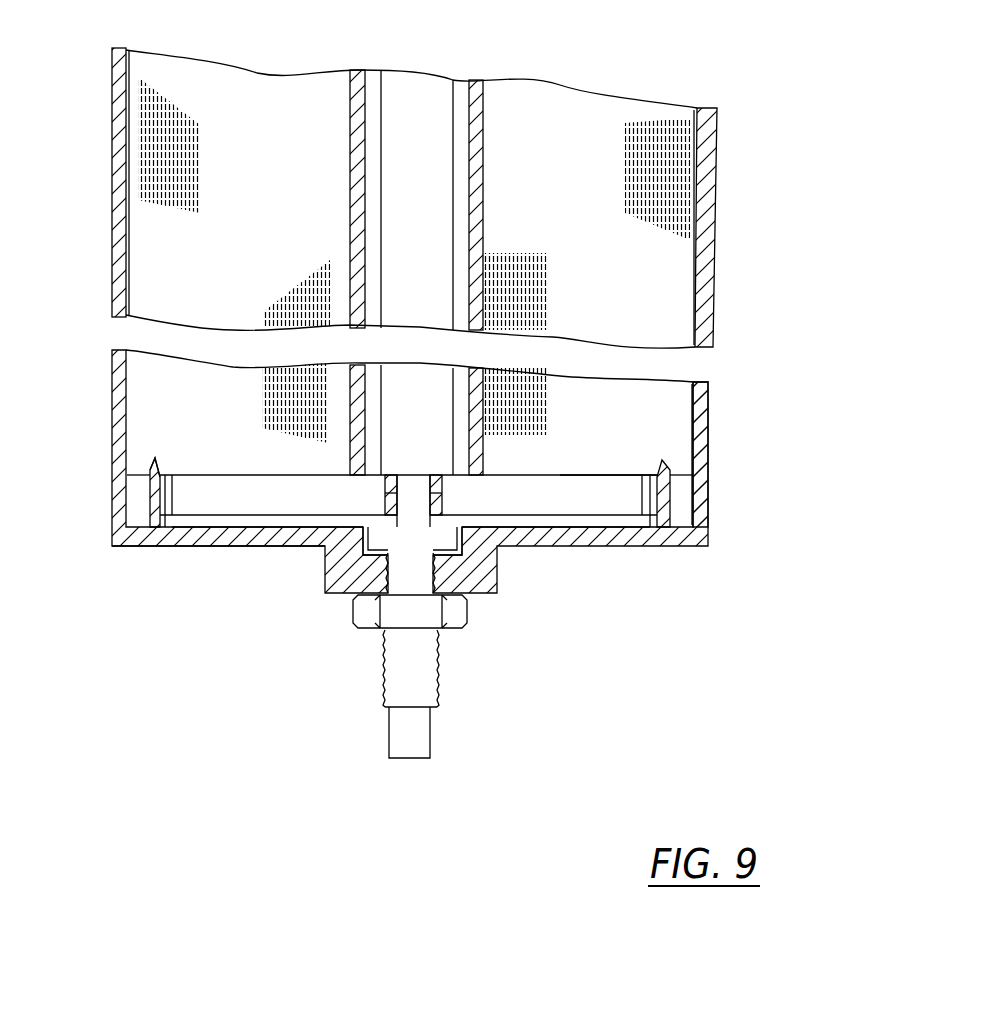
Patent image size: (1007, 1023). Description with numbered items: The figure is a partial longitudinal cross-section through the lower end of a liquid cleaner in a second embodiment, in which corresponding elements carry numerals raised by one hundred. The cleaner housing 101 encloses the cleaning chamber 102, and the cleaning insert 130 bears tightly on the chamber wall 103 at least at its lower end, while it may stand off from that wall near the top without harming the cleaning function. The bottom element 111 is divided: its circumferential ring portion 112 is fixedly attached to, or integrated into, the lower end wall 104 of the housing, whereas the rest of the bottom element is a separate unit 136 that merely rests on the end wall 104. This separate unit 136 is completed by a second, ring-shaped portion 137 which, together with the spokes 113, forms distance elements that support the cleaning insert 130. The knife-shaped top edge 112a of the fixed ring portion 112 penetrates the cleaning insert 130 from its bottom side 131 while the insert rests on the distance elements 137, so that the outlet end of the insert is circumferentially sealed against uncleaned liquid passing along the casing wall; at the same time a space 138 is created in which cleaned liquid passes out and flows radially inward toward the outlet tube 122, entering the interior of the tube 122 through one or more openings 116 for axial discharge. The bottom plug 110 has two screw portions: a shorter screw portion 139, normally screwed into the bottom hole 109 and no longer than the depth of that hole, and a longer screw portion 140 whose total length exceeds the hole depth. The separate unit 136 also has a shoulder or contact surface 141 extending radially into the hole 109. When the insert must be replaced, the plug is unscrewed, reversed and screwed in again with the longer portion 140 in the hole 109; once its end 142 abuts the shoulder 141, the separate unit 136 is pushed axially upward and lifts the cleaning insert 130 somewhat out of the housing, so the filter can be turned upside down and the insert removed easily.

The cleaner housing 101 is at (722, 258).
The cleaning chamber 102 is at (128, 384).
The housing wall 103 is at (702, 417).
The lower end wall 104 is at (185, 533).
The bottom hole 109 is at (463, 600).
The bottom plug 110 is at (363, 630).
The bottom element 111 is at (173, 453).
The ring portion 112 is at (145, 505).
The knife-shaped top edge 112a is at (152, 466).
The spokes 113 is at (568, 502).
The openings 116 is at (385, 493).
The outlet tube 122 is at (432, 497).
The cleaning insert 130 is at (136, 280).
The bottom side 131 is at (607, 483).
The separate unit 136 is at (634, 462).
The second ring-shaped portion 137 is at (158, 530).
The space 138 is at (217, 500).
The shorter screw portion 139 is at (405, 573).
The longer screw portion 140 is at (398, 692).
The shoulder 141 is at (437, 565).
The end 142 is at (403, 760).